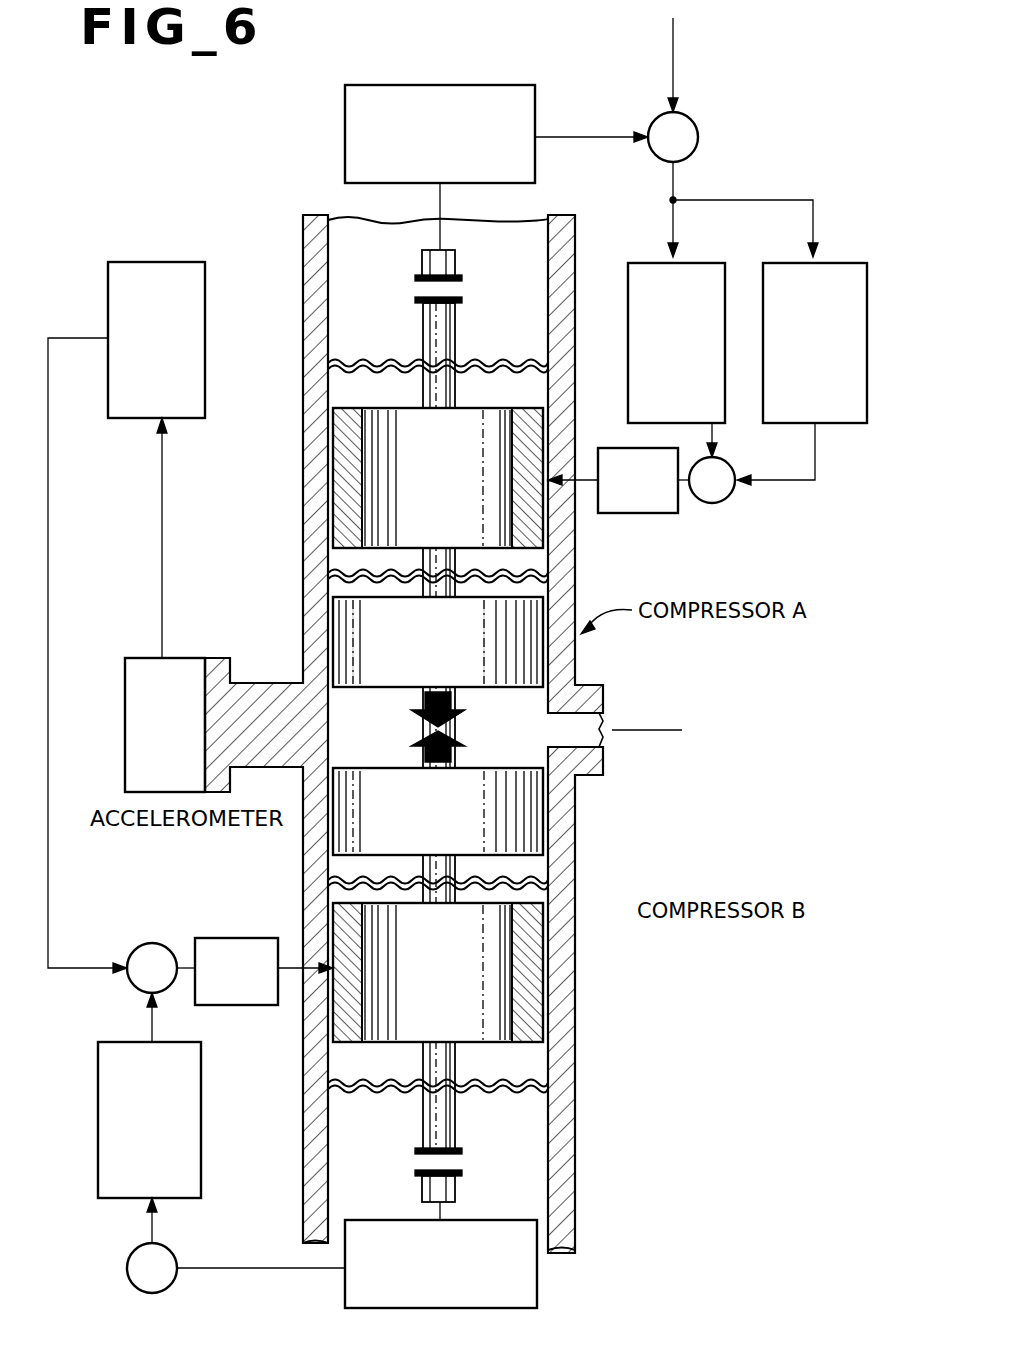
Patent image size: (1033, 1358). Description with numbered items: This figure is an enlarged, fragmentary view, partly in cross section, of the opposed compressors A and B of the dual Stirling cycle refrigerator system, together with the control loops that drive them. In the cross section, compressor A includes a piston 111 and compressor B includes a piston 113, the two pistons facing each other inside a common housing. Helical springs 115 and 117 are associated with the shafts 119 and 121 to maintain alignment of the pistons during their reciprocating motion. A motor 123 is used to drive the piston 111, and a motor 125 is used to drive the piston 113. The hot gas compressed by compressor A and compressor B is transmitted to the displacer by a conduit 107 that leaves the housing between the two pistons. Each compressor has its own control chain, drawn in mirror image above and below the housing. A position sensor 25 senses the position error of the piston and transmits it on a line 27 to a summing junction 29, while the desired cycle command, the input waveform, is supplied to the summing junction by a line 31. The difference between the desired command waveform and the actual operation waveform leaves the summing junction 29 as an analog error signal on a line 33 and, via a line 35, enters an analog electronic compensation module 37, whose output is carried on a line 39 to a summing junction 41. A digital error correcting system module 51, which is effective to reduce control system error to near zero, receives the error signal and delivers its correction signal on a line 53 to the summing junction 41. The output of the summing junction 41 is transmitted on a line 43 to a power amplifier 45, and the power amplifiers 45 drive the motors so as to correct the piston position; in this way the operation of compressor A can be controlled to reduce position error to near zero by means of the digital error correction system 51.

The position sensor 25 is at (437, 84).
The line 27 is at (600, 136).
The summing junction 29 is at (698, 137).
The line 31 is at (673, 58).
The line 33 is at (790, 200).
The error signal line to analog controller 35 is at (673, 232).
The analog electronic compensation module 37 is at (645, 262).
The line 39 is at (148, 1004).
The summing junction 41 is at (712, 503).
The line 43 is at (580, 478).
The power amplifier 45 is at (640, 514).
The digital error correcting system (DECS) module 51 is at (846, 263).
The line 53 is at (815, 470).
The conduit 107 is at (596, 688).
The piston 111 is at (352, 650).
The piston 113 is at (340, 825).
The helical spring 115 is at (386, 575).
The helical spring 117 is at (396, 886).
The shaft 119 is at (458, 520).
The shaft 121 is at (461, 962).
The motor 123 is at (364, 498).
The motor 125 is at (362, 968).